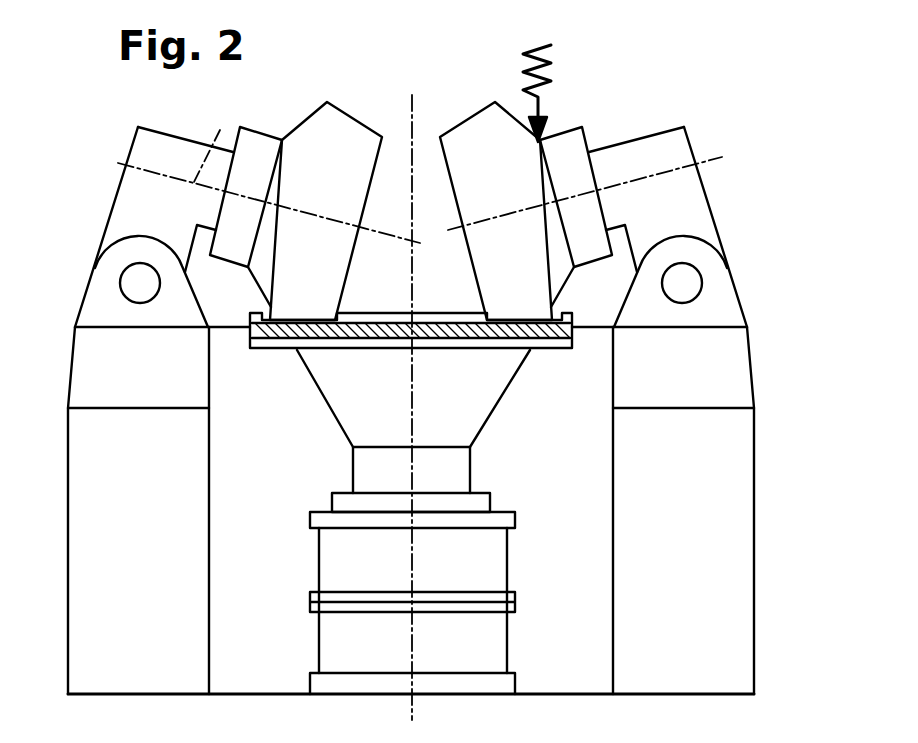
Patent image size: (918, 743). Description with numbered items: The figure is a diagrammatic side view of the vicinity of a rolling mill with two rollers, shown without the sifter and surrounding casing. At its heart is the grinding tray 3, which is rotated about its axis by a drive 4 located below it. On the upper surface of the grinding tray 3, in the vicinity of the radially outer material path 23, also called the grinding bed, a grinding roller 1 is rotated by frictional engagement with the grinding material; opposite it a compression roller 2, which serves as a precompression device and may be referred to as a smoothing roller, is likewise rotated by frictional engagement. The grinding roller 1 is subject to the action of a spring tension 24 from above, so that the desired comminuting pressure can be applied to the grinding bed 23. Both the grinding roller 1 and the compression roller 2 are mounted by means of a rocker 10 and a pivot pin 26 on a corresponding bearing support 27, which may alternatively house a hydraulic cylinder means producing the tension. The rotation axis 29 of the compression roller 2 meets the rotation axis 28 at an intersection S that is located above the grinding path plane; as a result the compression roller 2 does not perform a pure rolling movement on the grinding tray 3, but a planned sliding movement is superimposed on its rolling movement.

The grinding roller 1 is at (476, 132).
The compression roller 2 is at (338, 133).
The grinding tray 3 is at (478, 385).
The drive 4 is at (482, 558).
The rocker 10 is at (132, 214).
The radially outer material path 23 is at (297, 355).
The spring tension 24 is at (552, 72).
The pivot pin 26 is at (137, 285).
The bearing support 27 is at (88, 547).
The rotation axis 28 is at (410, 409).
The rotation axis of the compression roller 29 is at (220, 130).
The intersection S is at (410, 243).